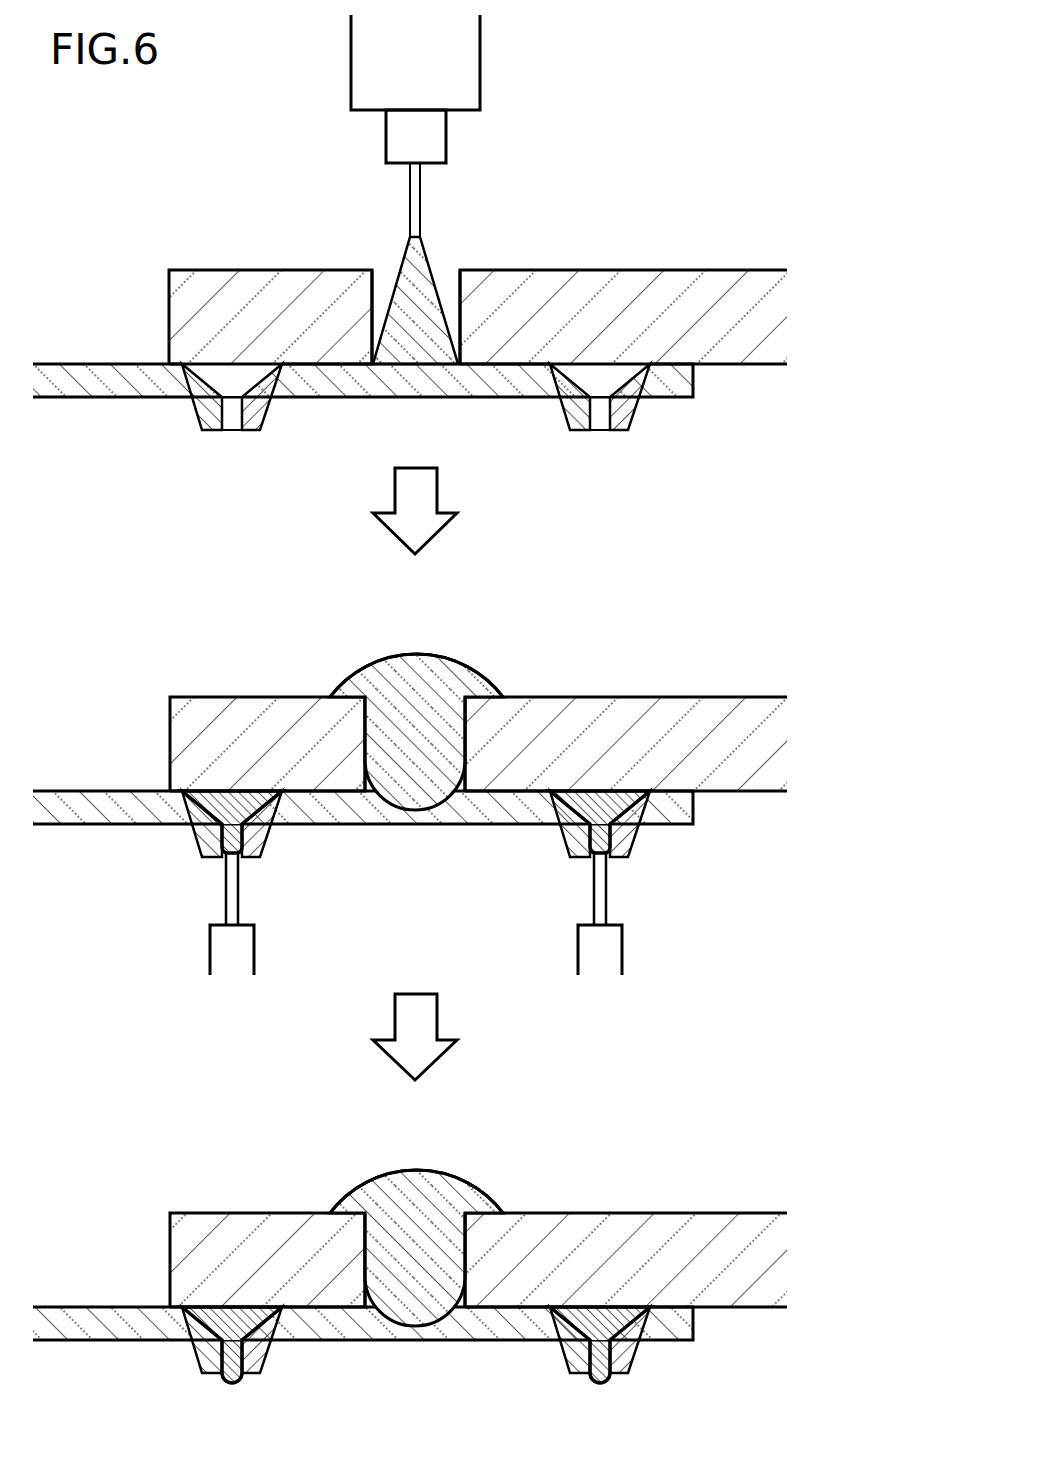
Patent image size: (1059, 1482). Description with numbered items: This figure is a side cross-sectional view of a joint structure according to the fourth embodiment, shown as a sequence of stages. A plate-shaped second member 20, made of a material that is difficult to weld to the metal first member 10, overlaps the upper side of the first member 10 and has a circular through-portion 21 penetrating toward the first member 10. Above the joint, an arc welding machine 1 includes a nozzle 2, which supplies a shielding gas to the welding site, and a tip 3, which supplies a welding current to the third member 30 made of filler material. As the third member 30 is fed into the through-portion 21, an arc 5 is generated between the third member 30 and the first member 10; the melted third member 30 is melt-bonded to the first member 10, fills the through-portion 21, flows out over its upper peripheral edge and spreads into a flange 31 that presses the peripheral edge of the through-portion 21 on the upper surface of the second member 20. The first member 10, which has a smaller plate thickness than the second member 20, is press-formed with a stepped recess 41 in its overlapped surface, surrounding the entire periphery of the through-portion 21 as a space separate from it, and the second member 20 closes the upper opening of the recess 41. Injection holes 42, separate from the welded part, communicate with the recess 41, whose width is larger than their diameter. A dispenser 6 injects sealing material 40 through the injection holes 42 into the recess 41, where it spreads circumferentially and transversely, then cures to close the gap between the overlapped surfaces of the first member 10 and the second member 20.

The arc welding machine 1 is at (454, 89).
The nozzle 2 is at (480, 92).
The tip 3 is at (446, 137).
The arc 5 is at (428, 249).
The dispenser 6 is at (210, 950).
The first member 10 is at (83, 364).
The second member 20 is at (712, 270).
The through-portion 21 is at (380, 292).
The third member 30 is at (420, 199).
The flange 31 is at (484, 677).
The sealing material 40 is at (230, 790).
The recess 41 is at (217, 387).
The injection hole 42 is at (242, 419).